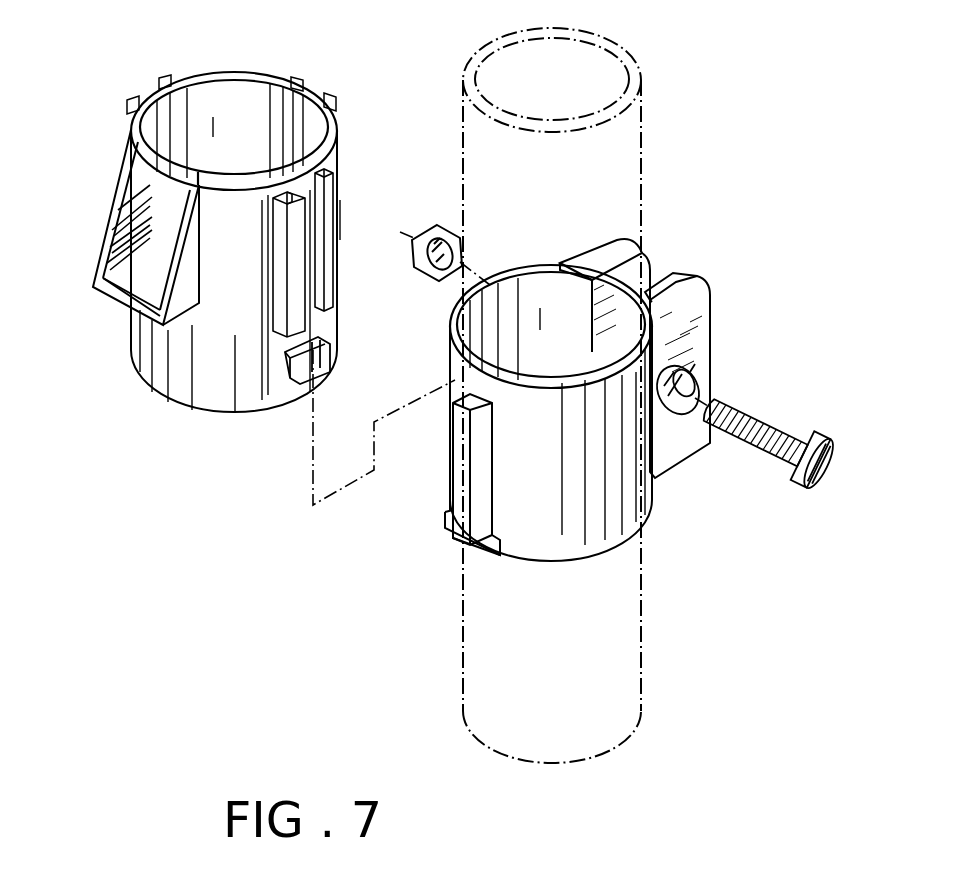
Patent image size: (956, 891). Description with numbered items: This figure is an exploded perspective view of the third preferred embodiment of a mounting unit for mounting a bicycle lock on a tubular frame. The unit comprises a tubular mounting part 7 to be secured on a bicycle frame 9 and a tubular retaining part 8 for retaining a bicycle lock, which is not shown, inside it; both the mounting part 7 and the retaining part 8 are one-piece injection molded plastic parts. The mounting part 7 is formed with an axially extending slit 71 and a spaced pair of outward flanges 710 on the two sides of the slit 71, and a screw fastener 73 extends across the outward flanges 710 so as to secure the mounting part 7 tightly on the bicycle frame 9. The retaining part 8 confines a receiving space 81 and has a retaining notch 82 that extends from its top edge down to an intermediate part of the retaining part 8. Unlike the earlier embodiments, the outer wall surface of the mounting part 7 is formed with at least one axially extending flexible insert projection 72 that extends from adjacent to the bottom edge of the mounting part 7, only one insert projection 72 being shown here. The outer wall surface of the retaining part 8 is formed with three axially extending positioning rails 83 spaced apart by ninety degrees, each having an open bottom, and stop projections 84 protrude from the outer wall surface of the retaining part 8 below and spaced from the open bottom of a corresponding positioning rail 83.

The mounting part 7 is at (648, 512).
The slit 71 is at (666, 266).
The insert projection 72 is at (457, 470).
The screw fastener 73 is at (772, 425).
The outward flanges 710 is at (673, 457).
The retaining part 8 is at (212, 393).
The receiving space 81 is at (240, 105).
The retaining notch 82 is at (137, 292).
The positioning rails 83 is at (118, 218).
The stop projections 84 is at (300, 390).
The bicycle frame 9 is at (648, 122).